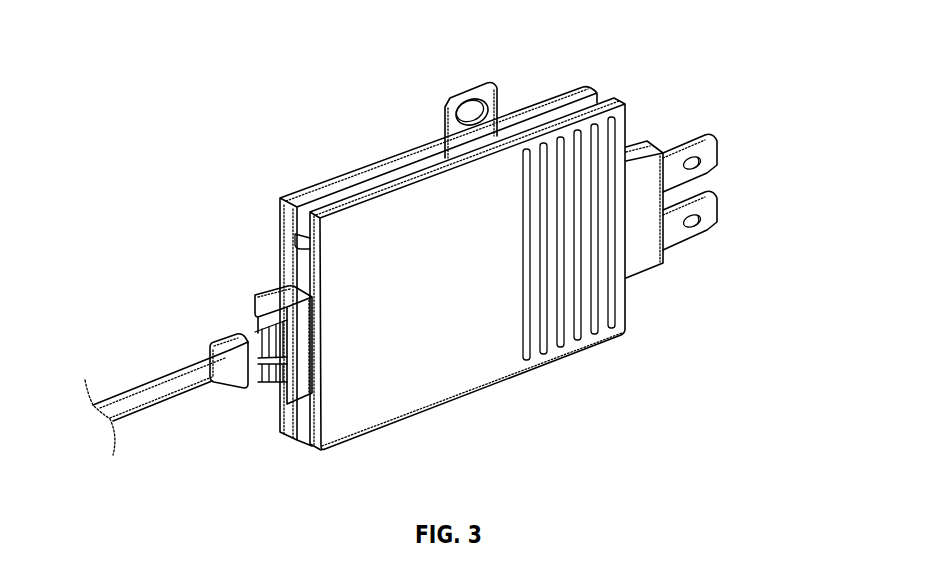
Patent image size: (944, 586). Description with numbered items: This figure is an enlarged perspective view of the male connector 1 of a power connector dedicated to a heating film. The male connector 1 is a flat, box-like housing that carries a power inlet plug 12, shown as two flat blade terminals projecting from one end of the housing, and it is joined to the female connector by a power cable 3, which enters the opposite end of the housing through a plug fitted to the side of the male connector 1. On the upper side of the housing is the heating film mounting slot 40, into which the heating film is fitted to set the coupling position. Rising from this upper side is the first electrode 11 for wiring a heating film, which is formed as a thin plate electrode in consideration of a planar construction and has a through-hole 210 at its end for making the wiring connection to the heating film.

The male connector 1 is at (475, 382).
The power cable 3 is at (178, 371).
The first electrode for wiring a heating film 11 is at (478, 86).
The power inlet plug 12 is at (708, 170).
The heating film mounting slot 40 is at (330, 193).
The through-hole 210 is at (445, 102).